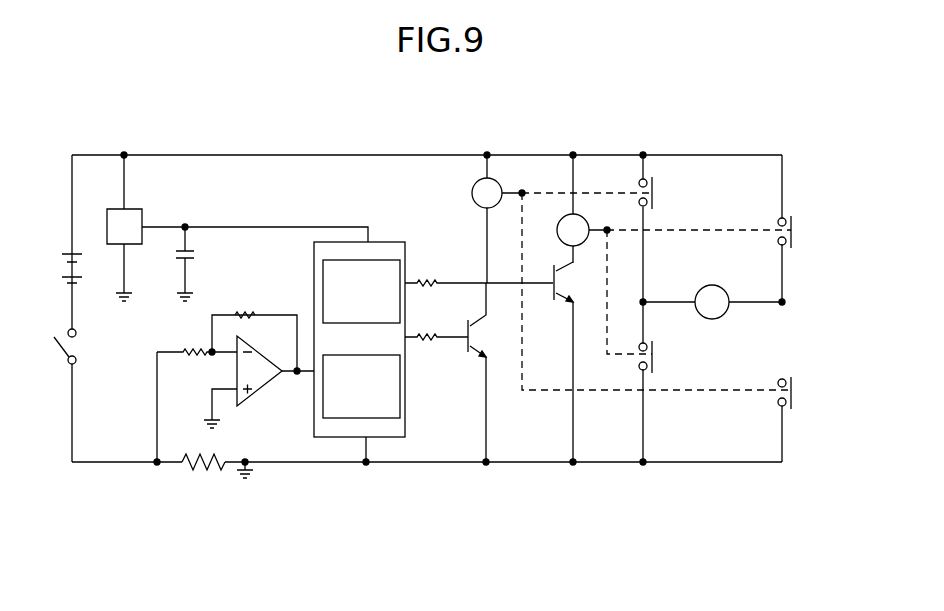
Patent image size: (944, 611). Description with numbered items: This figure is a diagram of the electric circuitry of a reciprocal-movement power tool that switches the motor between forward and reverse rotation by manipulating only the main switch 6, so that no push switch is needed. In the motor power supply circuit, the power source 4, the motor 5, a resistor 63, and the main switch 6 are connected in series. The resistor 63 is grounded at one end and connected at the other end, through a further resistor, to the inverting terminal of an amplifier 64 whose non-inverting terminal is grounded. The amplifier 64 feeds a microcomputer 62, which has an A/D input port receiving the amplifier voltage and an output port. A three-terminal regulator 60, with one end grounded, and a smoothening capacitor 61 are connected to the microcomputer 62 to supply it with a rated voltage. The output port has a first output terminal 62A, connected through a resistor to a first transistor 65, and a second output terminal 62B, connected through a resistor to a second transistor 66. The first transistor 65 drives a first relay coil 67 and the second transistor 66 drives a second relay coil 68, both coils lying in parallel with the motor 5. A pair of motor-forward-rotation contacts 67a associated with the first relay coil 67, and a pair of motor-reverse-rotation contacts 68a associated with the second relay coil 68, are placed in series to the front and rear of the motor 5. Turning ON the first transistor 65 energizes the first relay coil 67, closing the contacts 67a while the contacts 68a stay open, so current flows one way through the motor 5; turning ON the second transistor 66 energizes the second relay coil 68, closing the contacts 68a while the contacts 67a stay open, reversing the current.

The power source 4 is at (62, 266).
The motor 5 is at (712, 285).
The main switch 6 is at (80, 348).
The three-terminal regulator 60 is at (133, 212).
The smoothening capacitor 61 is at (197, 253).
The microcomputer 62 is at (378, 250).
The first output terminal 62A is at (407, 330).
The second output terminal 62B is at (407, 275).
The resistor 63 is at (198, 472).
The amplifier 64 is at (258, 383).
The first transistor 65 is at (467, 348).
The second transistor 66 is at (547, 305).
The first relay coil 67 is at (468, 186).
The motor-forward-rotation contacts 67a is at (660, 197).
The second relay coil 68 is at (575, 215).
The motor-reverse-rotation contacts 68a is at (833, 215).